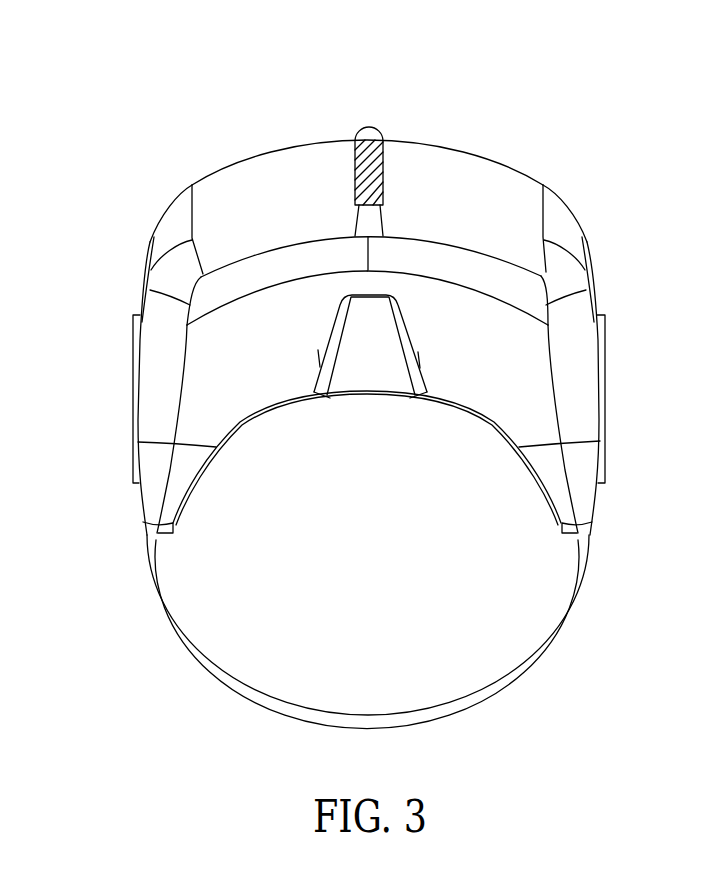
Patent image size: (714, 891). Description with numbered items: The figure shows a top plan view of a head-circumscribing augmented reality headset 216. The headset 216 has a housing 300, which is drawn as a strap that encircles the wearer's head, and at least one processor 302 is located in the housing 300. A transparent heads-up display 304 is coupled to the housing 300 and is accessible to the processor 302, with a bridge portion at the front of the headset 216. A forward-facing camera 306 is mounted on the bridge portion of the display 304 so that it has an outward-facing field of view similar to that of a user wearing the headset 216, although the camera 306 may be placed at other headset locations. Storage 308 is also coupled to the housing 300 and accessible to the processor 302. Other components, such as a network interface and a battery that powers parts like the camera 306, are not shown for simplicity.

The headset 216 is at (116, 44).
The housing 300 is at (535, 662).
The processor 302 is at (262, 289).
The display 304 is at (267, 156).
The forward-facing camera 306 is at (372, 126).
The storage 308 is at (460, 286).